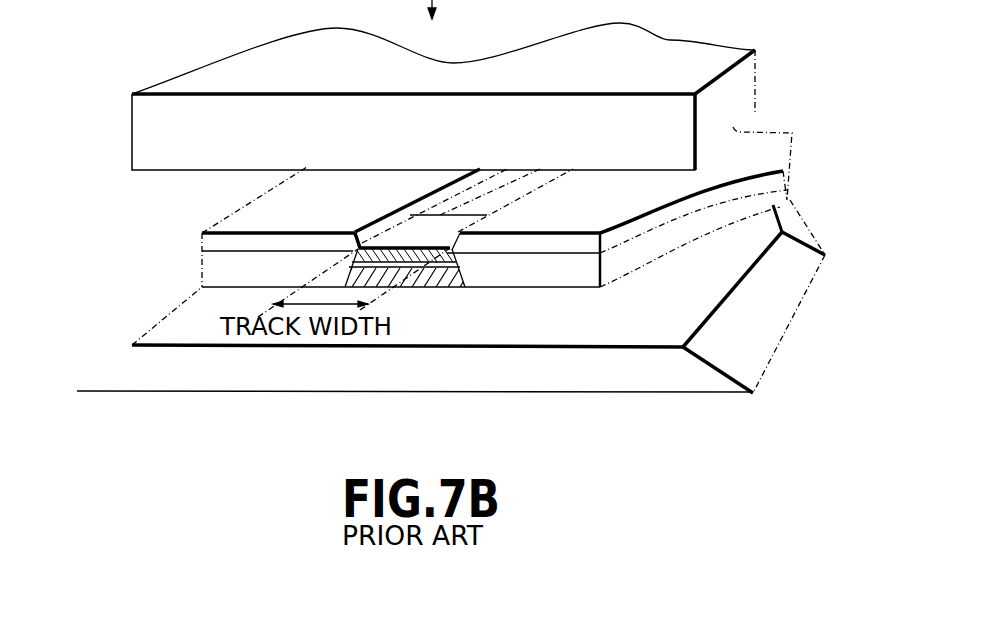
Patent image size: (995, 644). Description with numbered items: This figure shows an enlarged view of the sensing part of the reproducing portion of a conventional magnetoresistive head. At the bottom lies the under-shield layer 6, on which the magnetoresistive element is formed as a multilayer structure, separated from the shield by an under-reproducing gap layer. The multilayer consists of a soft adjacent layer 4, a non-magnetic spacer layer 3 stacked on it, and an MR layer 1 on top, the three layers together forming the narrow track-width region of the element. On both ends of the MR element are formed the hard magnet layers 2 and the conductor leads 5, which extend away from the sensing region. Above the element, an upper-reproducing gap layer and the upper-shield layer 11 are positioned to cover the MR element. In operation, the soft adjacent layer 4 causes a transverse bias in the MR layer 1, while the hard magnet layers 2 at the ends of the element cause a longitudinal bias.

The MR layer 1 is at (432, 258).
The hard magnet layers 2 is at (201, 278).
The non-magnetic spacer layer 3 is at (425, 266).
The soft adjacent layer 4 is at (420, 277).
The conductor leads 5 is at (201, 233).
The under-shield layer 6 is at (196, 392).
The upper-shield layer 11 is at (650, 62).